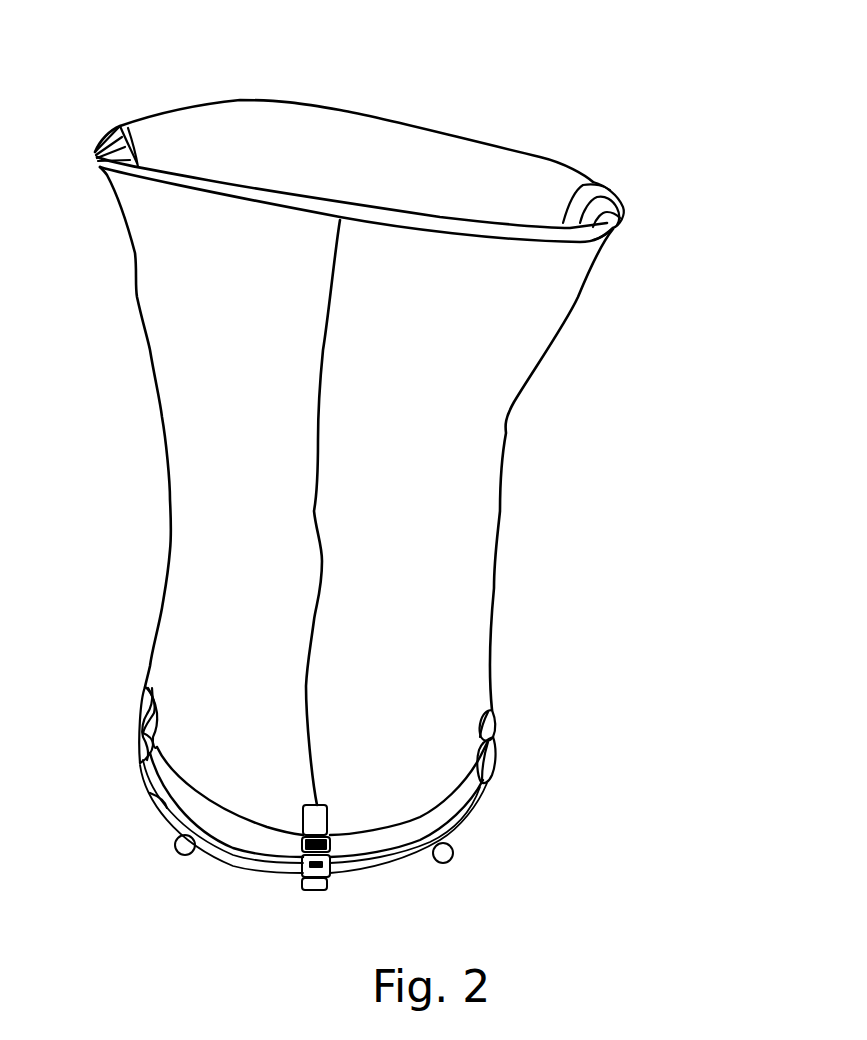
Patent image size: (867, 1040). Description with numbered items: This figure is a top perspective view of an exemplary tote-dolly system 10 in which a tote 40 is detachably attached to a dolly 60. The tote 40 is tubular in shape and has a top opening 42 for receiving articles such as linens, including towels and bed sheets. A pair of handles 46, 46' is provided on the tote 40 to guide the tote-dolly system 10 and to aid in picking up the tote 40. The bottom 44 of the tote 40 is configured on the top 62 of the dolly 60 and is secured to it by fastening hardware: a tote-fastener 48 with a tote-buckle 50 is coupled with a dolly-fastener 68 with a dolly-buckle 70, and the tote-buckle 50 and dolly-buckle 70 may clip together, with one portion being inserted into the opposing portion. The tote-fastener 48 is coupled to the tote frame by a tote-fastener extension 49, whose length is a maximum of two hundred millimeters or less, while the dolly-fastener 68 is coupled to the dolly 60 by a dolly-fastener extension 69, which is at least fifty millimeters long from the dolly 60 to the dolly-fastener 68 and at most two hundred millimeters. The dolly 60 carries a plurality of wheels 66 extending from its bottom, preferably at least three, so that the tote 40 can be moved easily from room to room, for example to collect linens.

The tote-dolly system 10 is at (200, 97).
The tote 40 is at (485, 421).
The top opening 42 is at (297, 143).
The handle 46 is at (93, 116).
The handle 46' is at (629, 201).
The bottom of the tote 44 is at (470, 823).
The tote-fastener 48 is at (500, 740).
The dolly-fastener 68 is at (497, 760).
The top of the dolly 62 is at (157, 793).
The dolly 60 is at (183, 827).
The wheels 66 is at (453, 863).
The tote-buckle 50 is at (317, 841).
The tote-fastener extension 49 is at (313, 812).
The dolly-buckle 70 is at (340, 877).
The dolly-fastener extension 69 is at (305, 890).